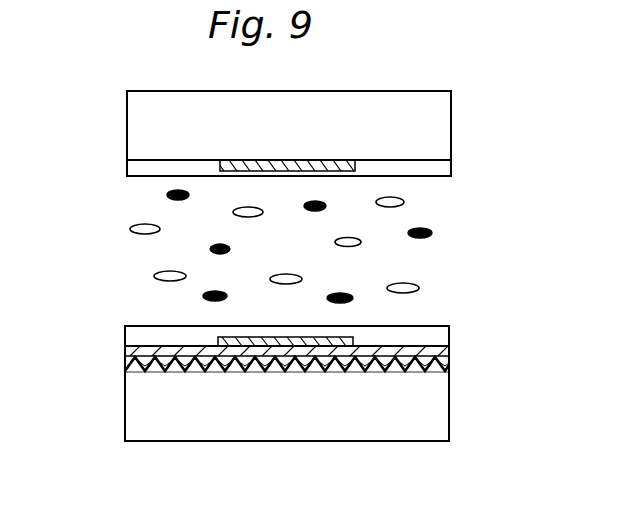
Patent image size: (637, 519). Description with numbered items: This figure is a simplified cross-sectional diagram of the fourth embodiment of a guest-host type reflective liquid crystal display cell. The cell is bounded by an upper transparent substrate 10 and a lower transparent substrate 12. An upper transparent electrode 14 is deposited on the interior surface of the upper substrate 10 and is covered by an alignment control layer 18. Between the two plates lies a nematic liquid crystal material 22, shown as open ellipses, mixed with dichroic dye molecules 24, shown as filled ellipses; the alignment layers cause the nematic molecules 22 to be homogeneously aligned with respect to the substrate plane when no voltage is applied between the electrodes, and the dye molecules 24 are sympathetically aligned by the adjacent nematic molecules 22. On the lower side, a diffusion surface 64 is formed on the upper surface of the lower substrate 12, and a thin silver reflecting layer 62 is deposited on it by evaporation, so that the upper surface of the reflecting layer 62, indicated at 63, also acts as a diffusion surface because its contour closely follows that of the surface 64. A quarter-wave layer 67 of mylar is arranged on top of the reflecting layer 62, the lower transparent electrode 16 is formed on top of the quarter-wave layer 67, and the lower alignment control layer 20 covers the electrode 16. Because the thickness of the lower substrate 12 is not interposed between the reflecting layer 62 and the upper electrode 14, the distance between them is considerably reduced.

The upper transparent substrate 10 is at (438, 120).
The alignment control layer 18 is at (438, 168).
The upper transparent electrode 14 is at (278, 160).
The nematic liquid crystal material 22 is at (405, 202).
The dichroic dye molecules 24 is at (432, 237).
The lower transparent substrate 12 is at (440, 412).
The alignment control layer 20 is at (440, 338).
The lower transparent electrode 16 is at (222, 340).
The quarter-wave layer 67 is at (124, 352).
The reflecting layer 62 is at (124, 363).
The zigzag layer boundary 63 is at (440, 362).
The diffusion surface 64 is at (130, 362).